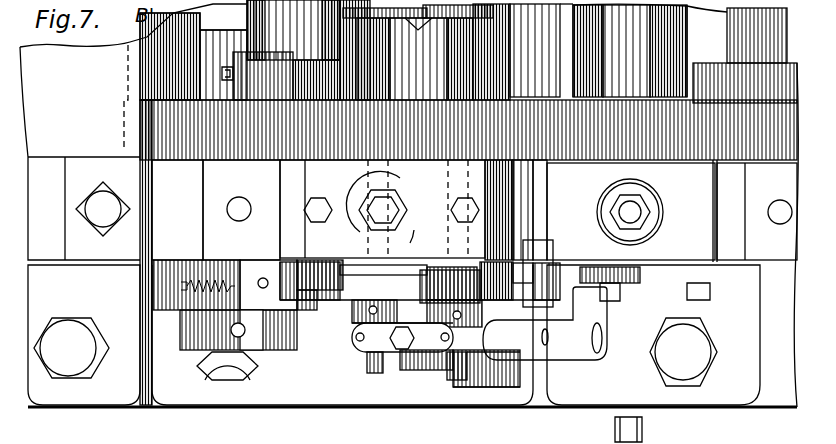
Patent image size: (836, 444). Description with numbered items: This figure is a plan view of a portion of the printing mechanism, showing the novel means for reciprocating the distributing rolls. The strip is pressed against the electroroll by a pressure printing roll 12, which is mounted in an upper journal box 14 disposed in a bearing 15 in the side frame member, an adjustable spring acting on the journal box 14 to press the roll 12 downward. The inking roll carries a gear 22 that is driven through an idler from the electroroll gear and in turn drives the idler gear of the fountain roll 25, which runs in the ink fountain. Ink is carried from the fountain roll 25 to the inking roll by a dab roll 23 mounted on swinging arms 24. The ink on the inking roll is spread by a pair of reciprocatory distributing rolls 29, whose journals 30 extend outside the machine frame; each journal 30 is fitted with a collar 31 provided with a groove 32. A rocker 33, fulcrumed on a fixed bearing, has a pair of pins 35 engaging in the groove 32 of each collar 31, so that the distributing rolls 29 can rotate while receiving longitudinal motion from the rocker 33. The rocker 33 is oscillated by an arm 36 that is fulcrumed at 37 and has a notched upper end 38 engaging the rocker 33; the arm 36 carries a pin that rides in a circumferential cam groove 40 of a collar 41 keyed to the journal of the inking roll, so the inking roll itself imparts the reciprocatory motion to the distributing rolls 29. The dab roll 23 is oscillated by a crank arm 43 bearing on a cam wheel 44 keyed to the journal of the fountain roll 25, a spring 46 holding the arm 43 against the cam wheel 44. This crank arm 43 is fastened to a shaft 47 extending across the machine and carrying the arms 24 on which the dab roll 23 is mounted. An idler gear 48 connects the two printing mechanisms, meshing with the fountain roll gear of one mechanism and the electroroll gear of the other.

The pressure printing roll 12 is at (650, 50).
The journal box 14 is at (651, 268).
The bearing 15 is at (693, 250).
The gear 22 is at (200, 162).
The dab roll 23 is at (290, 22).
The swinging arm 24 is at (302, 85).
The fountain roll 25 is at (172, 57).
The distributing roll 29 is at (420, 20).
The journal 30 is at (377, 355).
The collar 31 is at (362, 317).
The groove 32 is at (480, 390).
The rocker 33 is at (427, 340).
The pin 35 is at (362, 327).
The arm 36 is at (572, 360).
The fulcrum 37 is at (600, 340).
The notched upper end 38 is at (517, 383).
The circumferential cam groove 40 is at (477, 360).
The collar 41 is at (500, 390).
The crank arm 43 is at (318, 312).
The cam wheel 44 is at (220, 305).
The spring 46 is at (203, 293).
The shaft 47 is at (250, 40).
The idler gear 48 is at (737, 155).